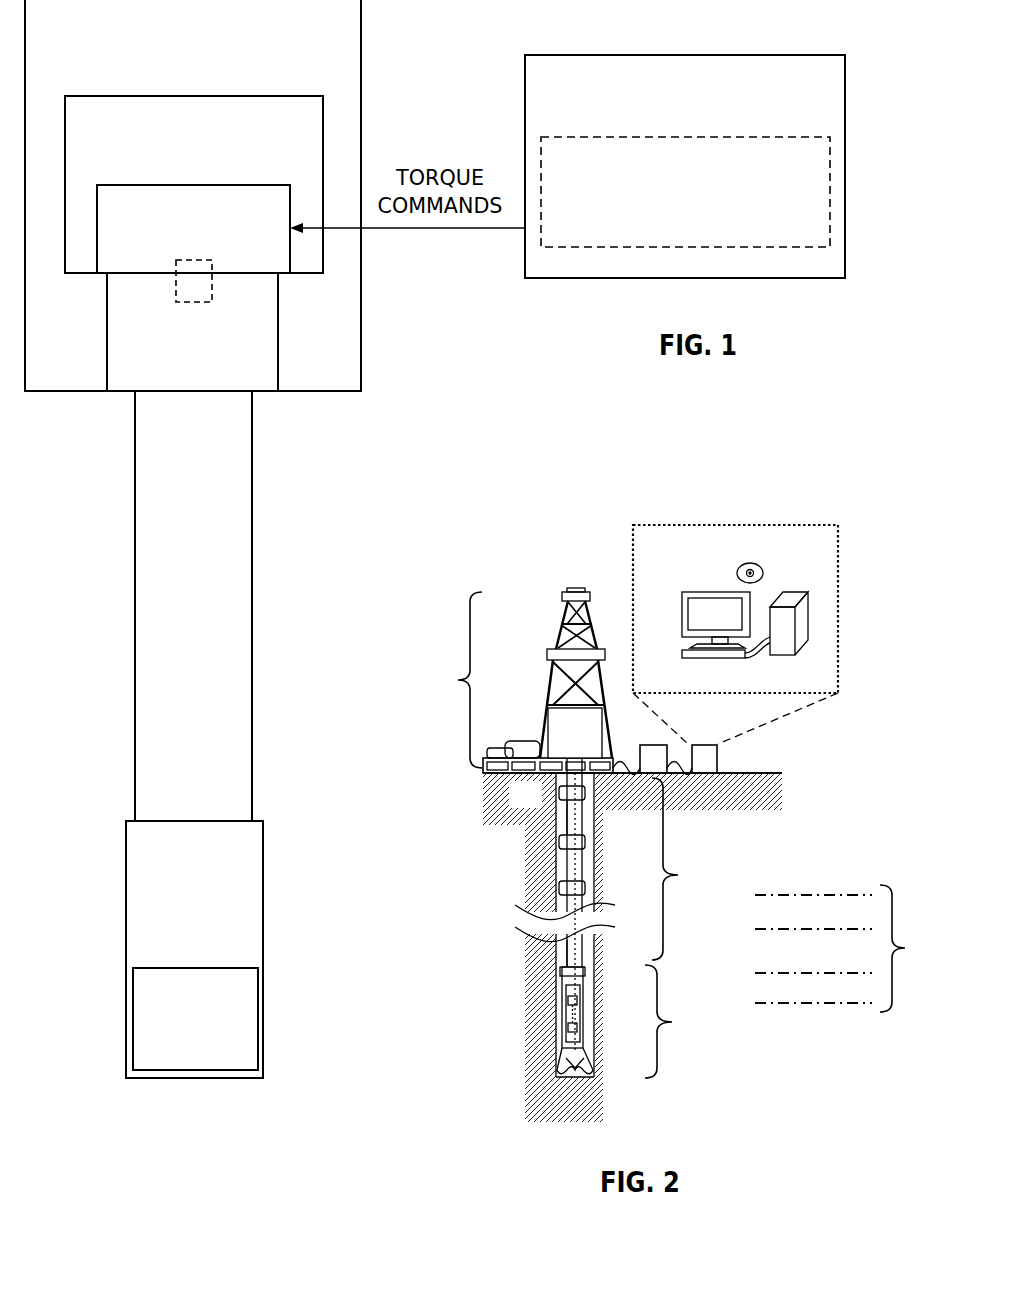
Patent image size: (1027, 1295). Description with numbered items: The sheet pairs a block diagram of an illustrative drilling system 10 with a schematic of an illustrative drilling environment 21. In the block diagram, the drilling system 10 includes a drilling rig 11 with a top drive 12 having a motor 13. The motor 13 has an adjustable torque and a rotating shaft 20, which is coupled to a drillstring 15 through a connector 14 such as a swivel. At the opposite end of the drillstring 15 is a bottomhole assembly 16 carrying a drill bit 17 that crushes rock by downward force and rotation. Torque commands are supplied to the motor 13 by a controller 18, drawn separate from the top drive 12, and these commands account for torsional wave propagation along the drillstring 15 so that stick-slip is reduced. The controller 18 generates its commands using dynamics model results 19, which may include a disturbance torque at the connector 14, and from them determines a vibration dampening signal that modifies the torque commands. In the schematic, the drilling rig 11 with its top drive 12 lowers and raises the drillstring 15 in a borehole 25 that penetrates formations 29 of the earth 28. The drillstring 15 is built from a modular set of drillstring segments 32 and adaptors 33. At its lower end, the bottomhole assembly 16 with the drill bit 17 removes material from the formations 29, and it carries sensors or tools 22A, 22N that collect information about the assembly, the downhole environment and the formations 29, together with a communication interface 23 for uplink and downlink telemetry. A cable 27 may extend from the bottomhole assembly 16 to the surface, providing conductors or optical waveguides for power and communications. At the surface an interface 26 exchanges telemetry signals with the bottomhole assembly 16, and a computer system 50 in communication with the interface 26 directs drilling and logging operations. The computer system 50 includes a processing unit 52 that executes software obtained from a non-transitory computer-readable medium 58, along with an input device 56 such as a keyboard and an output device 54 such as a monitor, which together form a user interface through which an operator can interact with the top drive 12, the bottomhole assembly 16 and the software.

In FIG. 1, the drilling system 10 is at (428, 315).
In FIG. 1, the drilling rig 11 is at (181, 66).
In FIG. 2, the drilling rig 11 is at (521, 680).
In FIG. 1, the top drive 12 is at (181, 162).
In FIG. 2, the top drive 12 is at (564, 742).
In FIG. 1, the motor 13 is at (181, 251).
In FIG. 1, the connector 14 is at (181, 370).
In FIG. 1, the drillstring 15 is at (181, 639).
In FIG. 2, the drillstring 15 is at (638, 904).
In FIG. 1, the bottomhole assembly (BHA) 16 is at (182, 889).
In FIG. 2, the bottomhole assembly (BHA) 16 is at (629, 1021).
In FIG. 1, the drill bit 17 is at (182, 1063).
In FIG. 2, the drill bit 17 is at (588, 1057).
In FIG. 1, the controller 18 is at (673, 121).
In FIG. 1, the dynamics model results 19 is at (673, 229).
In FIG. 1, the rotating shaft 20 is at (205, 283).
In FIG. 2, the drilling environment 21 is at (508, 569).
In FIG. 2, the sensor or tool 22A is at (578, 1002).
In FIG. 2, the sensor or tool 22N is at (578, 1028).
In FIG. 2, the communication interface 23 is at (585, 982).
In FIG. 2, the borehole 25 is at (597, 822).
In FIG. 2, the interface 26 is at (655, 743).
In FIG. 2, the cable 27 is at (583, 953).
In FIG. 2, the earth 28 is at (514, 804).
In FIG. 2, the formations 29 is at (849, 948).
In FIG. 2, the drillstring segments 32 is at (582, 827).
In FIG. 2, the adaptors 33 is at (558, 845).
In FIG. 2, the computer system 50 is at (720, 760).
In FIG. 2, the processing unit 52 is at (788, 595).
In FIG. 2, the output device 54 is at (680, 617).
In FIG. 2, the input device 56 is at (733, 659).
In FIG. 2, the non-transitory computer-readable medium 58 is at (745, 565).